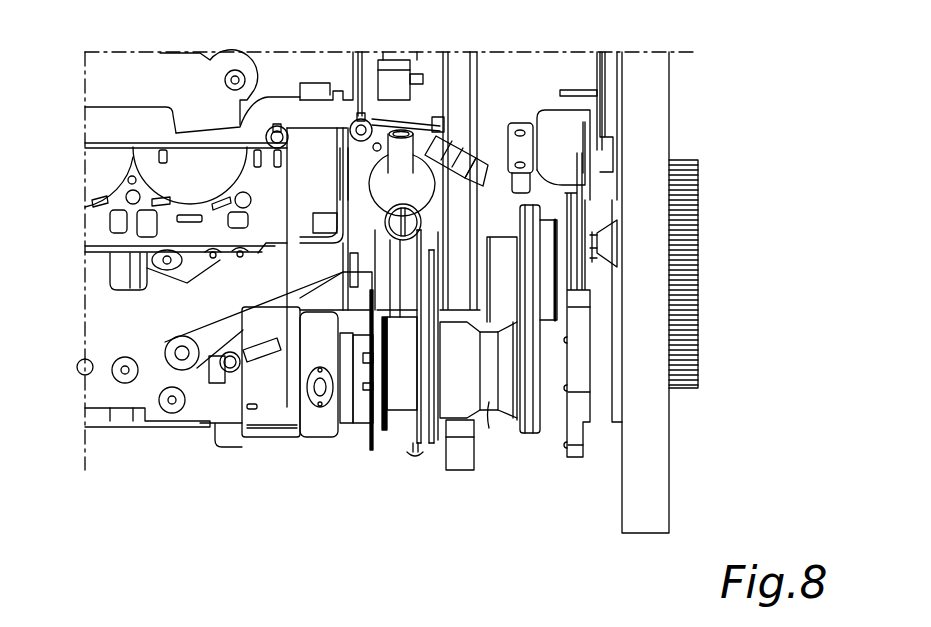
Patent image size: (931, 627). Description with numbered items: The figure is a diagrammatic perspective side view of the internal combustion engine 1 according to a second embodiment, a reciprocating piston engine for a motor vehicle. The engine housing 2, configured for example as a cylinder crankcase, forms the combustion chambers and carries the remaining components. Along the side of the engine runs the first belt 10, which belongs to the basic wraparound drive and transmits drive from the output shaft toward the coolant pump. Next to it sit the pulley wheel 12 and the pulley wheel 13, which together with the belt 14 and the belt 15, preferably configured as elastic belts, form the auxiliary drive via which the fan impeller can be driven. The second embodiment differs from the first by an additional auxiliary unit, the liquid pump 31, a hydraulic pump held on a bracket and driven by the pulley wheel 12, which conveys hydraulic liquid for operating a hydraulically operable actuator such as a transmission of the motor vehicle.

The internal combustion engine 1 is at (92, 71).
The engine housing 2 is at (90, 328).
The first belt 10 is at (467, 83).
The pulley wheel 12 is at (487, 404).
The pulley wheel 13 is at (550, 242).
The belt 14 is at (429, 434).
The belt 15 is at (530, 434).
The liquid pump 31 is at (276, 441).